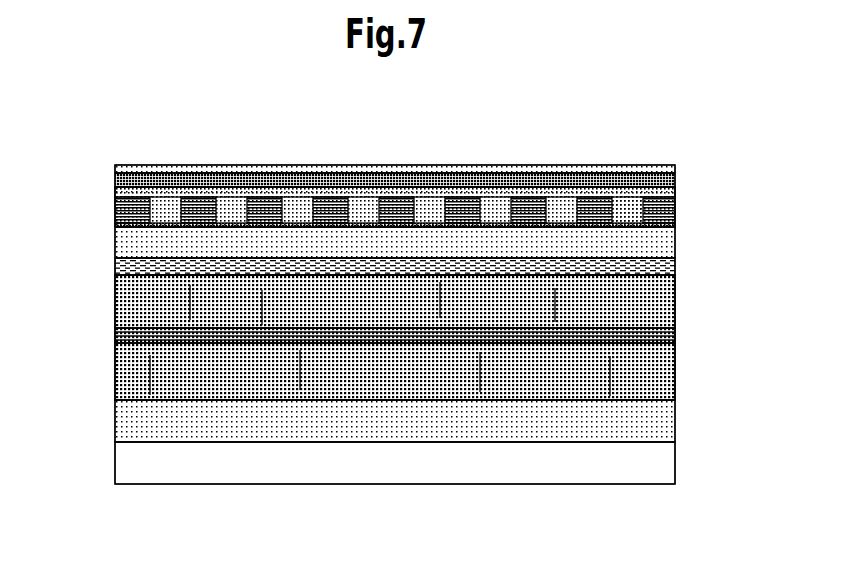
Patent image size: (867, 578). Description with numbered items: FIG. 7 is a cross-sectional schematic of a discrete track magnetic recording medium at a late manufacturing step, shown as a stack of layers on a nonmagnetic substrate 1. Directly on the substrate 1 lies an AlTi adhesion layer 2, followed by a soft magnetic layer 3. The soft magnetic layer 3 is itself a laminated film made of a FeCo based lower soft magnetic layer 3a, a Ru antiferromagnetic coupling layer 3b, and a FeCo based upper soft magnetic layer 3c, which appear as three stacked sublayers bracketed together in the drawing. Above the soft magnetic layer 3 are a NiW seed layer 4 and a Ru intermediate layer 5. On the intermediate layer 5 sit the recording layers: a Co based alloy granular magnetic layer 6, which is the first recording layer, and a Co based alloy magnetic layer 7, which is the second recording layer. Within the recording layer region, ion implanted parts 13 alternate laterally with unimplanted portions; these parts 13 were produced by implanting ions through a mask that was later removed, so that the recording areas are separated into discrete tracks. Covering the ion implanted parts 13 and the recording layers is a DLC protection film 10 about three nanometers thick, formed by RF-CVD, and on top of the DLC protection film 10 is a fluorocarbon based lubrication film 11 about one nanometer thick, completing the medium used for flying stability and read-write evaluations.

The nonmagnetic substrate 1 is at (665, 463).
The AlTi adhesion layer 2 is at (676, 428).
The soft magnetic layer 3 is at (115, 278).
The FeCo based lower soft magnetic layer 3a is at (676, 378).
The Ru antiferromagnetic coupling layer 3b is at (676, 338).
The FeCo based upper soft magnetic layer 3c is at (676, 305).
The NiW seed layer 4 is at (676, 268).
The Ru intermediate layer 5 is at (676, 250).
The Co based alloy granular magnetic layer 6 is at (676, 215).
The Co based alloy magnetic layer 7 is at (114, 190).
The DLC protection film 10 is at (114, 168).
The fluorocarbon based lubrication film 11 is at (337, 165).
The ion implanted part 13 is at (628, 203).